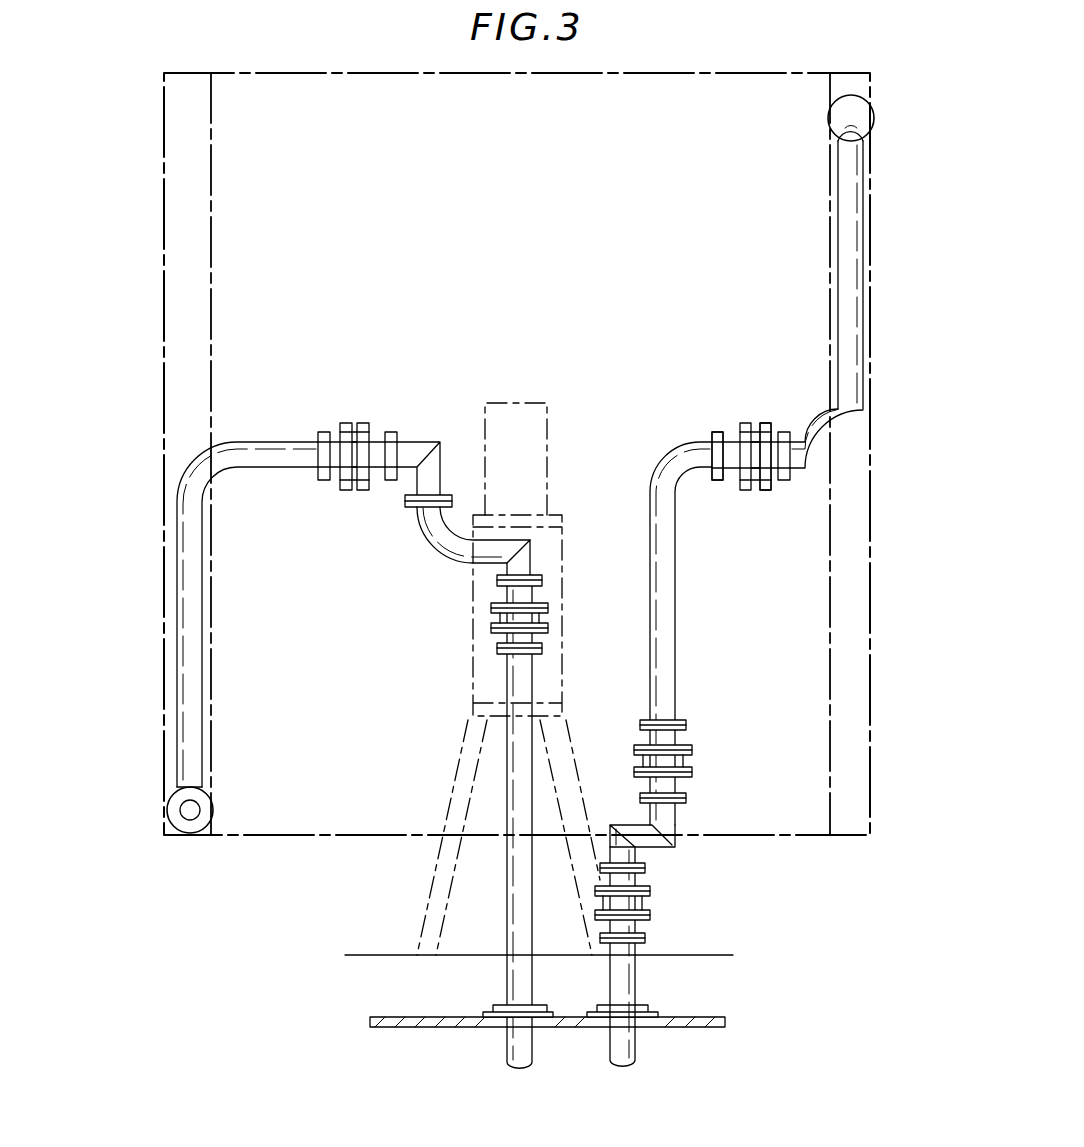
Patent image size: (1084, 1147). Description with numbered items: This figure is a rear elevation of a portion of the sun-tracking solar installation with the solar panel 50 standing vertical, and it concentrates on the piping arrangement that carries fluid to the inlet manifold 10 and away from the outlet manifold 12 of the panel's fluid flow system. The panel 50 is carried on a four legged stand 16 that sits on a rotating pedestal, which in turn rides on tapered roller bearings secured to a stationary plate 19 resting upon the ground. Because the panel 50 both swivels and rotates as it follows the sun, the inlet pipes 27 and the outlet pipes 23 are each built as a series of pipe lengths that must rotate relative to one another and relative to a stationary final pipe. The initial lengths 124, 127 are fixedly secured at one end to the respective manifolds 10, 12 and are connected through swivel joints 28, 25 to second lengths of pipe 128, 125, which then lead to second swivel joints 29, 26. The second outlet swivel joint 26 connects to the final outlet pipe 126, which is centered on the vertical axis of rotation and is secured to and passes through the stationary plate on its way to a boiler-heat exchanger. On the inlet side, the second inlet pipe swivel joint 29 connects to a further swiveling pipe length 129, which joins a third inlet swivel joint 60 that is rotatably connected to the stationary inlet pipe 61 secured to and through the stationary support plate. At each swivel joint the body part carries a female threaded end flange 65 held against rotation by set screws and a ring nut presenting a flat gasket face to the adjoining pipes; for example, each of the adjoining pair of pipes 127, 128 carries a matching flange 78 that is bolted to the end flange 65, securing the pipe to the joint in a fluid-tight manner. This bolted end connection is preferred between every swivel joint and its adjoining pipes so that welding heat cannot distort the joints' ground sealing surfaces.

The inlet manifold 10 is at (829, 97).
The outlet manifold 12 is at (212, 212).
The solar panel 50 is at (380, 221).
The four legged stand 16 is at (432, 893).
The stationary plate 19 is at (383, 1016).
The outlet pipes 23 is at (200, 810).
The swivel joint 25 is at (354, 422).
The second outlet swivel joint 26 is at (548, 618).
The inlet pipes 27 is at (746, 410).
The swivel joint 28 is at (756, 490).
The second inlet pipe swivel joint 29 is at (700, 767).
The third inlet swivel joint 60 is at (650, 904).
The stationary inlet pipe 61 is at (637, 991).
The end flange 65 is at (718, 430).
The matching flange 78 is at (713, 437).
The initial pipe length 124 is at (205, 682).
The second length of pipe 125 is at (456, 566).
The final outlet pipe 126 is at (507, 980).
The initial pipe length 127 is at (838, 124).
The second length of pipe 128 is at (676, 630).
The further swiveling pipe length 129 is at (670, 848).